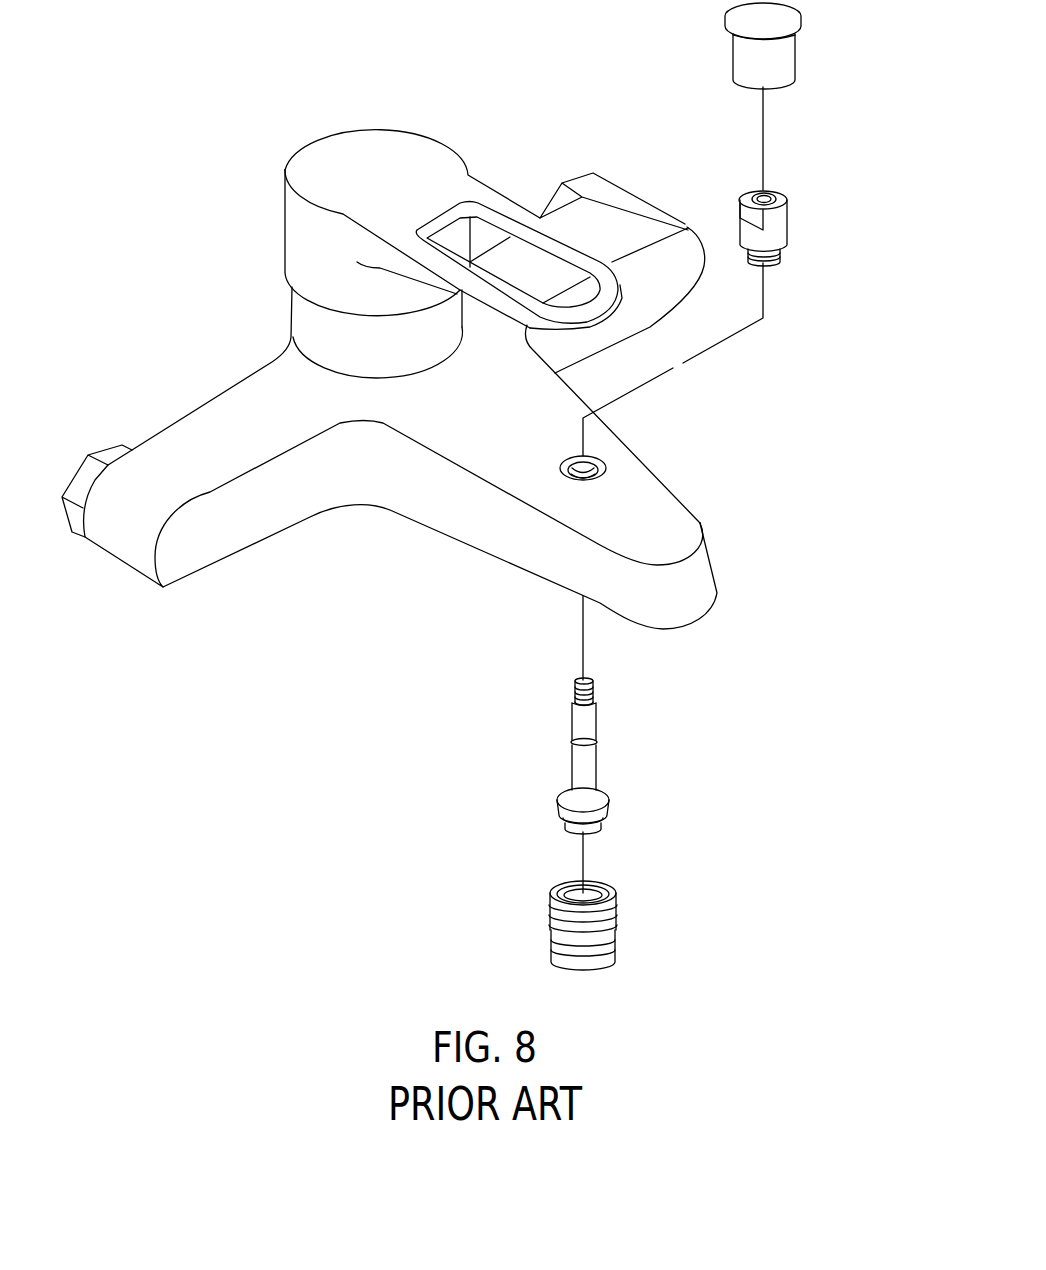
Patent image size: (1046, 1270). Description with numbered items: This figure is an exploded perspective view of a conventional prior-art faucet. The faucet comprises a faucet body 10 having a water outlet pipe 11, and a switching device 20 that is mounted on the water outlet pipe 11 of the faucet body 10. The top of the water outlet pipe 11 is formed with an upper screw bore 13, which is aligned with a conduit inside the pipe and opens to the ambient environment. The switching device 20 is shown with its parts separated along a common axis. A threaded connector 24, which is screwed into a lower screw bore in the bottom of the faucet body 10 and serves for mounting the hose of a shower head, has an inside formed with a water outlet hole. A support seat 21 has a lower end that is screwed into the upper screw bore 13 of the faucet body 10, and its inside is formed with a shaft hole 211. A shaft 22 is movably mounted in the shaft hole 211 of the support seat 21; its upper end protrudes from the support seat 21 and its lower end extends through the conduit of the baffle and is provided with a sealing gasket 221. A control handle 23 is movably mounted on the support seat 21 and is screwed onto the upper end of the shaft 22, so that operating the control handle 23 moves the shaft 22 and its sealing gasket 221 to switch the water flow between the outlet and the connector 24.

The faucet body 10 is at (643, 196).
The water outlet pipe 11 is at (688, 527).
The upper screw bore 13 is at (603, 466).
The switching device 20 is at (601, 756).
The support seat 21 is at (816, 209).
The shaft hole 211 is at (777, 193).
The shaft 22 is at (590, 770).
The sealing gasket 221 is at (557, 809).
The control handle 23 is at (790, 60).
The threaded connector 24 is at (617, 948).